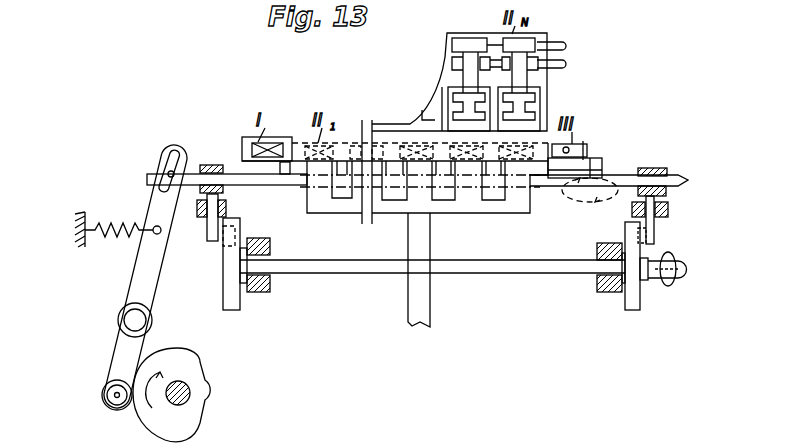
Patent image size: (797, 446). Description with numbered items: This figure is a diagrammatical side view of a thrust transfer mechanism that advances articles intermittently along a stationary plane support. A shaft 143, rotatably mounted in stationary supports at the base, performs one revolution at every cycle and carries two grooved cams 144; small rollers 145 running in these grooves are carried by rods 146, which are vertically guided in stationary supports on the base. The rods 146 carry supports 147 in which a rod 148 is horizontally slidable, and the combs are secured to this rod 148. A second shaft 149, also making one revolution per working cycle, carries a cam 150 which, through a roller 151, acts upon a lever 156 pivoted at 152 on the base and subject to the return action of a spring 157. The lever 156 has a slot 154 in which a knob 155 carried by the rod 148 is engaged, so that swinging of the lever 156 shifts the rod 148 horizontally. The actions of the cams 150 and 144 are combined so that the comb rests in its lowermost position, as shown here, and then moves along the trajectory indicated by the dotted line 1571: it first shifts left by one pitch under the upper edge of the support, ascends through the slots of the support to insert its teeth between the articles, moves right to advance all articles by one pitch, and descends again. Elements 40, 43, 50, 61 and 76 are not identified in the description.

The valve housing 40 is at (541, 82).
The fluid conduit 43 is at (566, 60).
The fluid conduit 50 is at (552, 42).
The vertical member 61 is at (418, 294).
The switch unit 76 is at (580, 147).
The shaft 143 is at (478, 266).
The cams 144 is at (232, 301).
The small rollers 145 is at (660, 252).
The rods 146 is at (657, 228).
The supports 147 is at (652, 168).
The rod 148 is at (682, 181).
The shaft 149 is at (186, 386).
The cam 150 is at (190, 418).
The roller 151 is at (103, 397).
The pivot 152 is at (132, 318).
The slot 154 is at (176, 148).
The knob 155 is at (169, 173).
The lever 156 is at (143, 270).
The spring 157 is at (111, 226).
The dotted line 1571 is at (572, 196).